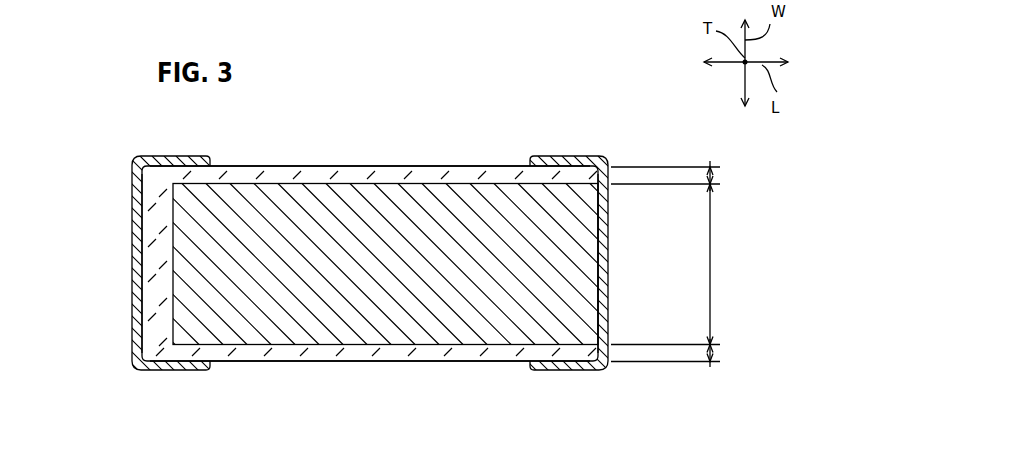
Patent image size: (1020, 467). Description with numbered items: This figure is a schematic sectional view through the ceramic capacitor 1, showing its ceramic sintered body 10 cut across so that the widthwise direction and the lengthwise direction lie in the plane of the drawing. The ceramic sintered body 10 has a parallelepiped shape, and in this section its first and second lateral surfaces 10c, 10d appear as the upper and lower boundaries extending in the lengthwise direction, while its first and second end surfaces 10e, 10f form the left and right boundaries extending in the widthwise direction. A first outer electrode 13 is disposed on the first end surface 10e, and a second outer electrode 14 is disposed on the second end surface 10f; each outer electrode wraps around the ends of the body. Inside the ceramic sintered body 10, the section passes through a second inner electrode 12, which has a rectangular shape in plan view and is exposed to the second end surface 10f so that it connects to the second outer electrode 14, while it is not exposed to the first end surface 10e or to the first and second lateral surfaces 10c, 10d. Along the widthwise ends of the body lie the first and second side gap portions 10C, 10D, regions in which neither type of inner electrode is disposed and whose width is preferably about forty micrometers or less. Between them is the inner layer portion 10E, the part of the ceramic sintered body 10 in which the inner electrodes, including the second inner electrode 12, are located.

The ceramic capacitor 1 is at (566, 121).
The ceramic sintered body 10 is at (484, 164).
The first lateral surface 10c is at (362, 165).
The second lateral surface 10d is at (353, 362).
The first end surface 10e is at (143, 271).
The second end surface 10f is at (600, 219).
The second inner electrode 12 is at (261, 346).
The first outer electrode 13 is at (131, 215).
The second outer electrode 14 is at (607, 280).
The first side gap portion 10C is at (712, 175).
The second side gap portion 10D is at (712, 353).
The inner layer portion 10E is at (733, 264).